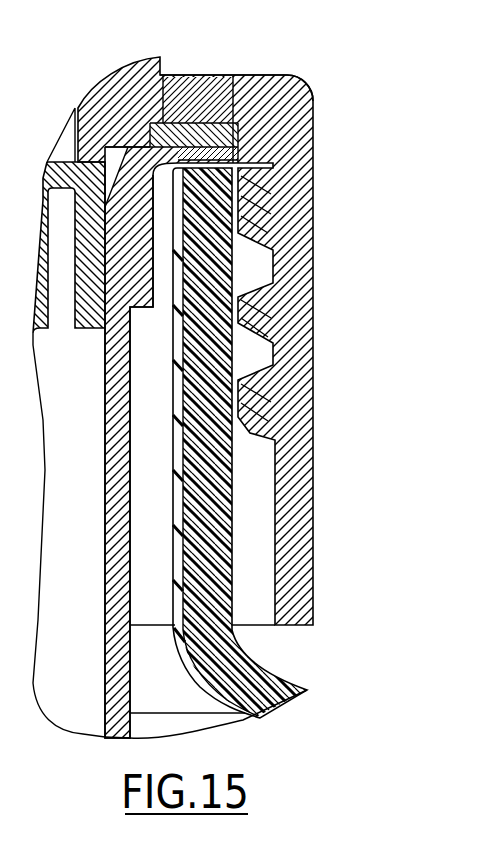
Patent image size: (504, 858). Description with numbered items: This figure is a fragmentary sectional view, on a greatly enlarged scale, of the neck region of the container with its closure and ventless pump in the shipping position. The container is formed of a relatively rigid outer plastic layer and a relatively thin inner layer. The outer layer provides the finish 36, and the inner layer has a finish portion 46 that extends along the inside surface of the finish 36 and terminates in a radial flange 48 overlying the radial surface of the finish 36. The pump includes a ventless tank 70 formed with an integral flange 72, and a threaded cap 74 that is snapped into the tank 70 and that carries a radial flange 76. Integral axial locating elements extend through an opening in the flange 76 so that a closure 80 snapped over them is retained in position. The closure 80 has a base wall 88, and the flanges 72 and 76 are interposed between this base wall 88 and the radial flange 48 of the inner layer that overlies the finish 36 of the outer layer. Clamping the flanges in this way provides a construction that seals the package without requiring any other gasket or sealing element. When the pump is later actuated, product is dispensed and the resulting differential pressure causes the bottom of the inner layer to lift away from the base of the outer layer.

The finish 36 is at (225, 557).
The finish portion 46 is at (180, 373).
The radial flange 48 is at (305, 87).
The ventless tank 70 is at (105, 433).
The integral flange 72 is at (183, 123).
The threaded cap 74 is at (68, 138).
The radial flange 76 is at (217, 125).
The closure 80 is at (313, 192).
The base wall 88 is at (275, 77).